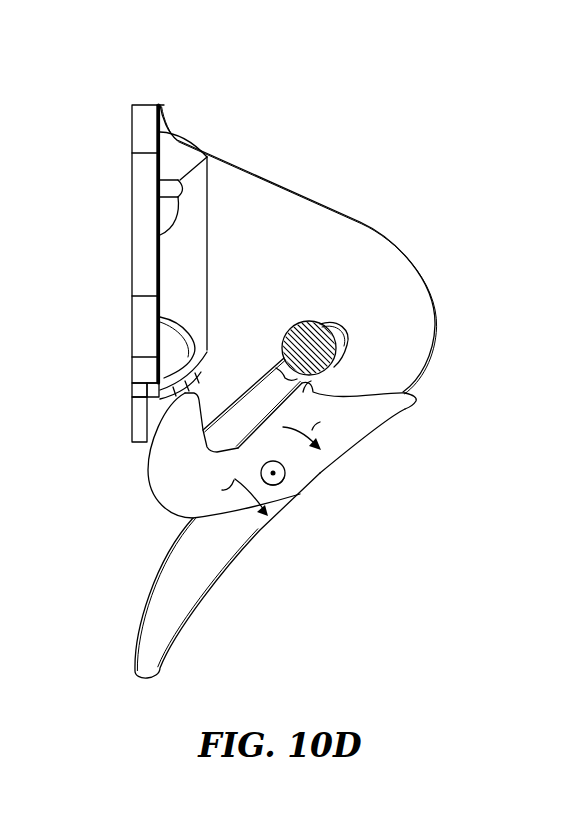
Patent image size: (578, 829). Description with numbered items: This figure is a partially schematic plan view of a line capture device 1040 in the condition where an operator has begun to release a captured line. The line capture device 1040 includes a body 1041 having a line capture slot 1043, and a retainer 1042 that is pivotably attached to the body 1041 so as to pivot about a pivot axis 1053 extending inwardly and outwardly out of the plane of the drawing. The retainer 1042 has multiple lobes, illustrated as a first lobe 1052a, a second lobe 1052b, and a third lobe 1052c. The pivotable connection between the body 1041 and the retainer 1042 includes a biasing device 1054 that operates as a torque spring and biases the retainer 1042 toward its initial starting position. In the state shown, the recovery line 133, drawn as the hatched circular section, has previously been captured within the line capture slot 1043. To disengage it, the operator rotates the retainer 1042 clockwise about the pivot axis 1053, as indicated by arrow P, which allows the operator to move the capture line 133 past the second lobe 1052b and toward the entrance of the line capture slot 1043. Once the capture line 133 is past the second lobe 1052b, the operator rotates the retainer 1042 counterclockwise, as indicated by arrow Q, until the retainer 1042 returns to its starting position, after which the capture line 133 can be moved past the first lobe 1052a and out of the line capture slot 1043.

The line capture device 1040 is at (305, 98).
The body 1041 is at (337, 214).
The recovery line 133 is at (309, 322).
The line capture slot 1043 is at (258, 394).
The first lobe 1052a is at (182, 398).
The second lobe 1052b is at (303, 388).
The third lobe 1052c is at (405, 394).
The retainer 1042 is at (165, 497).
The pivot axis 1053 is at (276, 474).
The biasing device 1054 is at (274, 484).